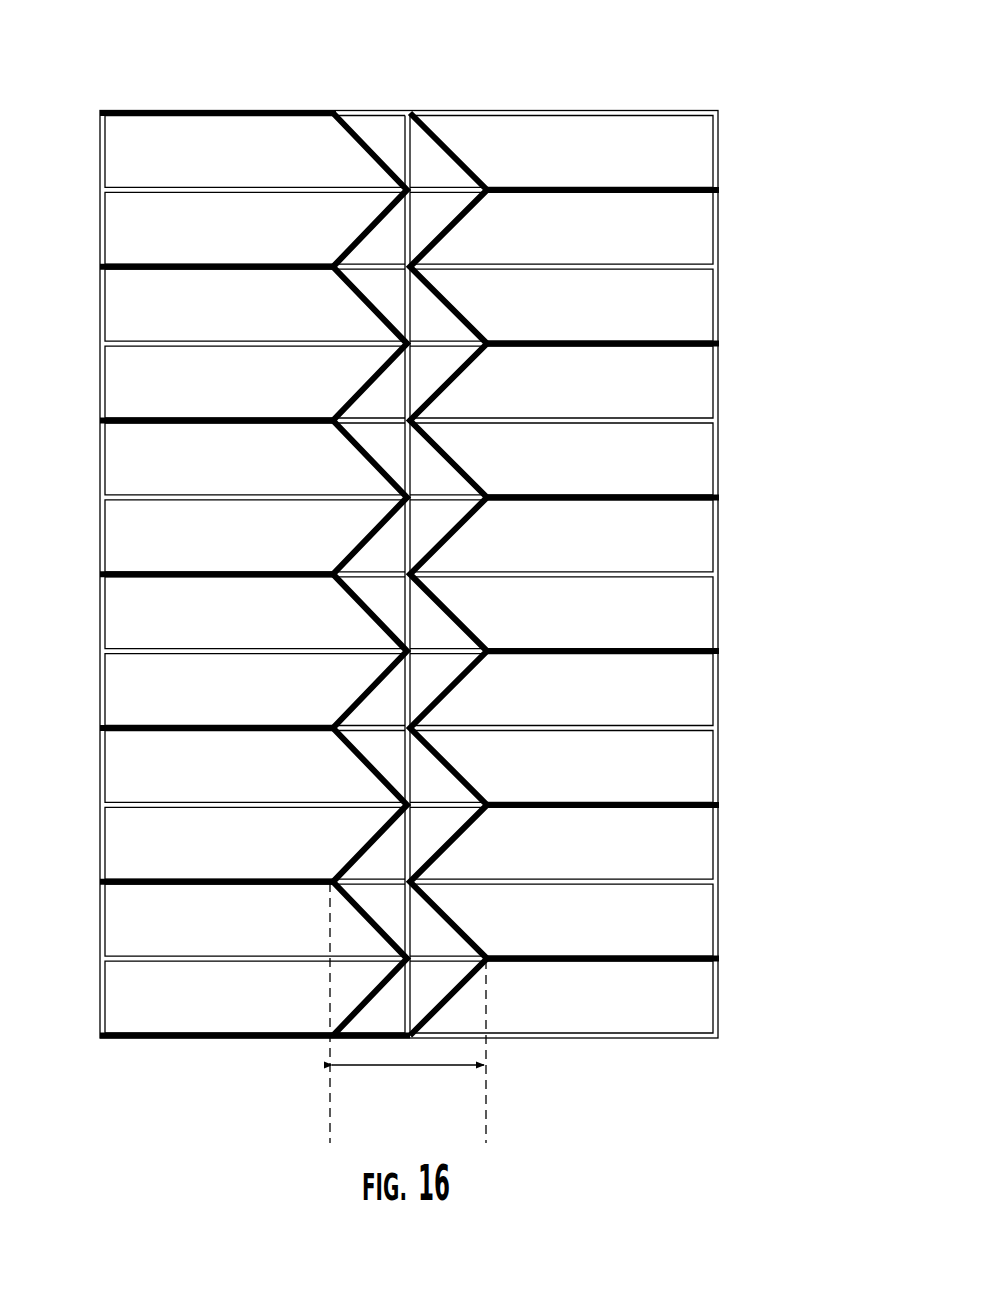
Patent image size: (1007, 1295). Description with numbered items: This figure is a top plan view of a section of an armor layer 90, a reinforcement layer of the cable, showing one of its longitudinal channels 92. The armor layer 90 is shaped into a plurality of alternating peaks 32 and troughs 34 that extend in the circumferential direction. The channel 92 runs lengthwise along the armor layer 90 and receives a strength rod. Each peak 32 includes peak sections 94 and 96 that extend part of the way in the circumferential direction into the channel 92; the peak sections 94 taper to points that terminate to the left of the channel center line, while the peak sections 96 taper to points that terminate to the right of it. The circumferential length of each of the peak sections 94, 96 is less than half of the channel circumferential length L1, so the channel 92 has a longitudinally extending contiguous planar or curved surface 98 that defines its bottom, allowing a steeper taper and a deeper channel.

The armor layer 90 is at (800, 76).
The longitudinal channel 92 is at (377, 1044).
The peak section 94 is at (349, 160).
The peak section 96 is at (462, 238).
The contiguous surface 98 is at (416, 158).
The peak 32 is at (128, 193).
The trough 34 is at (133, 268).
The channel circumferential length L1 is at (428, 1068).